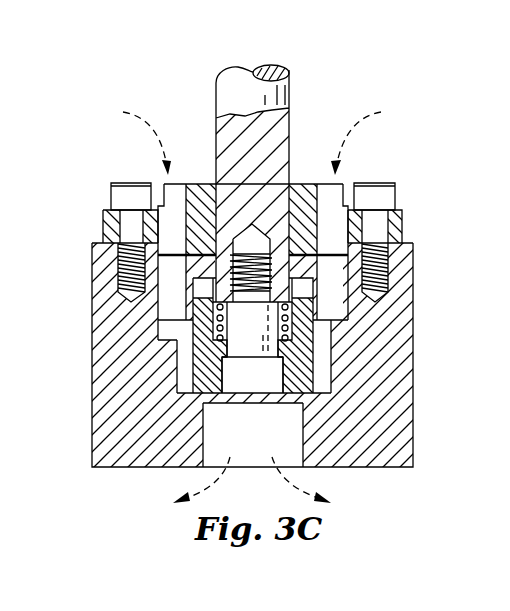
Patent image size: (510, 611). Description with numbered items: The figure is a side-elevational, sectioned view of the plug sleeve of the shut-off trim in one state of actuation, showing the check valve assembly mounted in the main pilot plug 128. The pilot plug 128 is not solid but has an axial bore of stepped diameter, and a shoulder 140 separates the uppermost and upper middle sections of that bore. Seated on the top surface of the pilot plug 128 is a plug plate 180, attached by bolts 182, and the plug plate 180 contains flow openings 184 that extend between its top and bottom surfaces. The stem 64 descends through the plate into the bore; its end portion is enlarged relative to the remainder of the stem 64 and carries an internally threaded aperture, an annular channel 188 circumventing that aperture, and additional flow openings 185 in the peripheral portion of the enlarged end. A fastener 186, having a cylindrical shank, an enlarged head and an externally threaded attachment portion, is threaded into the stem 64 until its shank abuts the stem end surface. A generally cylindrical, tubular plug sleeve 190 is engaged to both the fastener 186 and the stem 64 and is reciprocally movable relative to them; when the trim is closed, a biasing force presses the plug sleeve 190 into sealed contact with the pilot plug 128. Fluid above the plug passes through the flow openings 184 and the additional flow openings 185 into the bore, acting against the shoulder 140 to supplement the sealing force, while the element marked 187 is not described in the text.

The stem 64 is at (217, 83).
The main pilot plug 128 is at (373, 455).
The shoulder 140 is at (348, 329).
The plug plate 180 is at (300, 184).
The bolts 182 is at (128, 183).
The flow openings 184 is at (176, 225).
The additional flow openings 185 is at (167, 315).
The fastener 186 is at (293, 273).
The insert cup 187 is at (190, 327).
The annular groove or channel 188 is at (193, 295).
The plug sleeve 190 is at (307, 368).